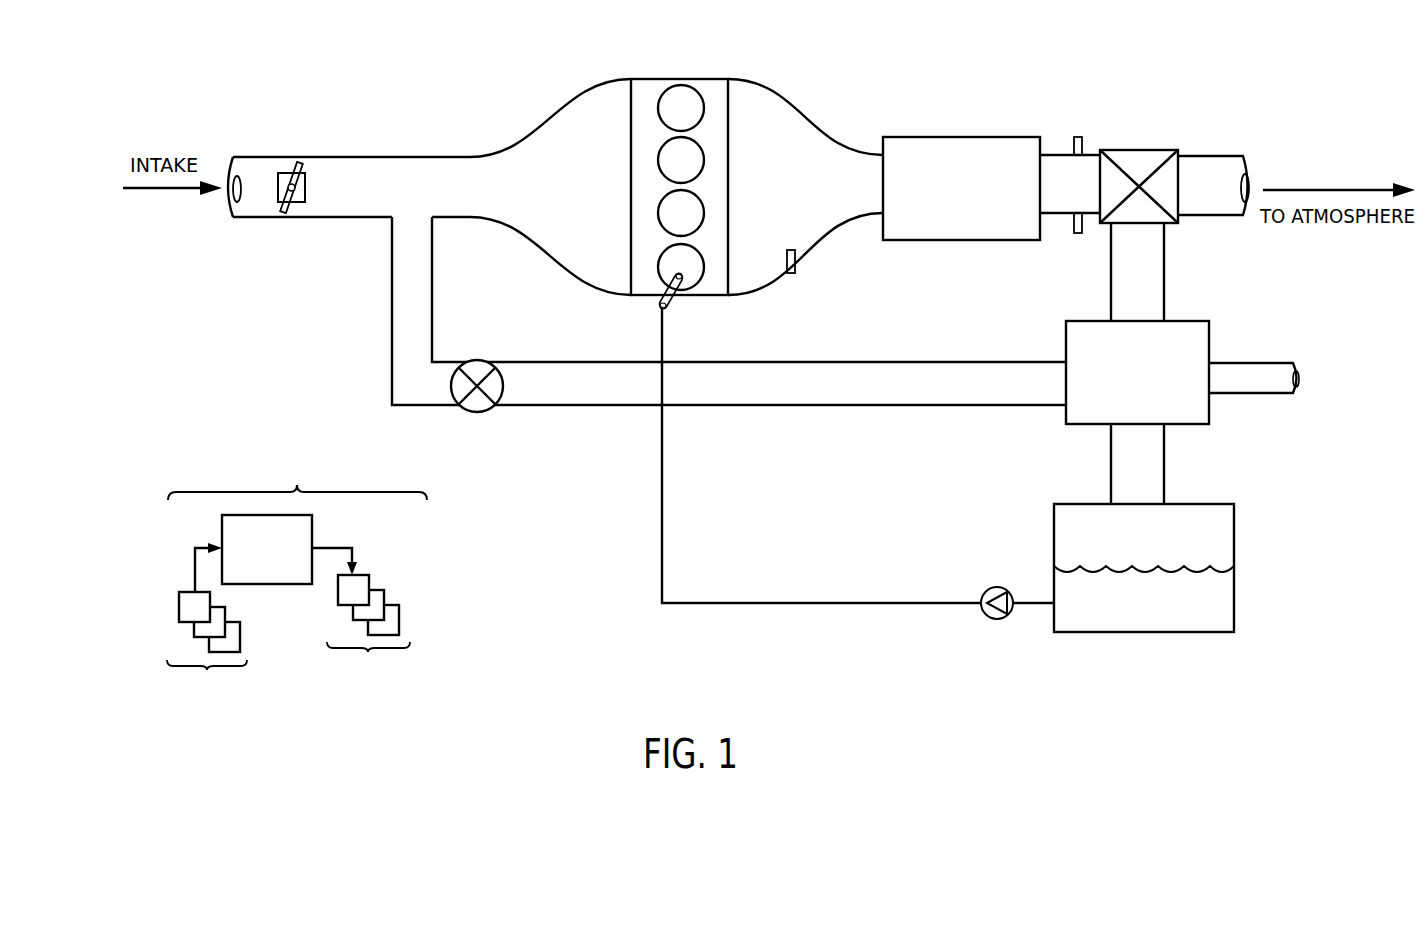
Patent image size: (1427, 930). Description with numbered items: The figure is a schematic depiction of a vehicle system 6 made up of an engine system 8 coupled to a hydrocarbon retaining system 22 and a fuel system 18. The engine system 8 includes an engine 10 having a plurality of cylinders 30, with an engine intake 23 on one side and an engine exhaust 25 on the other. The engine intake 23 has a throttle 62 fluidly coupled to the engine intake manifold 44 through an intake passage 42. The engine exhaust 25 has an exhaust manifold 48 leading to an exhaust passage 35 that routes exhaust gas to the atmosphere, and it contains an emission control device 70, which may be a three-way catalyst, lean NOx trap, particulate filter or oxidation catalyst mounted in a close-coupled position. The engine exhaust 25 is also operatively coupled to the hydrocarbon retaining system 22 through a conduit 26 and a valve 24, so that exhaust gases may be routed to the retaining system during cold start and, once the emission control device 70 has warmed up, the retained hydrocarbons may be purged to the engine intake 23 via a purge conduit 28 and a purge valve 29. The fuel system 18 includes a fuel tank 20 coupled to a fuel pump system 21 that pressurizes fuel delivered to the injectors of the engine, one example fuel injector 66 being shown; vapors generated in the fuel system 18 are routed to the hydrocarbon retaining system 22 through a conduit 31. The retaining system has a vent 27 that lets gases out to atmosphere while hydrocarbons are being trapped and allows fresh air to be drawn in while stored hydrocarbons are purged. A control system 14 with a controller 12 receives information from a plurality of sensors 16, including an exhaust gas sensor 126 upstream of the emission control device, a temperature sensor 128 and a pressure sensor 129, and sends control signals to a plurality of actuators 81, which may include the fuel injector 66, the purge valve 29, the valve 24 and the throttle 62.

The vehicle system 6 is at (312, 74).
The engine system 8 is at (856, 40).
The engine 10 is at (728, 168).
The controller 12 is at (276, 553).
The control system 14 is at (297, 470).
The sensors 16 is at (207, 654).
The fuel system 18 is at (1155, 684).
The fuel tank 20 is at (1234, 612).
The fuel pump system 21 is at (996, 590).
The hydrocarbon retaining system 22 is at (1209, 352).
The engine intake 23 is at (432, 132).
The valve 24 is at (1128, 150).
The engine exhaust 25 is at (1080, 90).
The conduit 26 is at (1137, 272).
The vent 27 is at (1254, 378).
The purge conduit 28 is at (729, 311).
The purge valve 29 is at (480, 360).
The cylinders 30 is at (700, 94).
The conduit 31 is at (1137, 464).
The exhaust passage 35 is at (1088, 152).
The intake passage 42 is at (344, 218).
The engine intake manifold 44 is at (583, 189).
The exhaust manifold 48 is at (805, 187).
The throttle 62 is at (318, 194).
The fuel injector 66 is at (668, 302).
The emission control device 70 is at (942, 137).
The actuators 81 is at (368, 637).
The exhaust gas sensor 126 is at (796, 258).
The temperature sensor 128 is at (1074, 224).
The pressure sensor 129 is at (1074, 146).